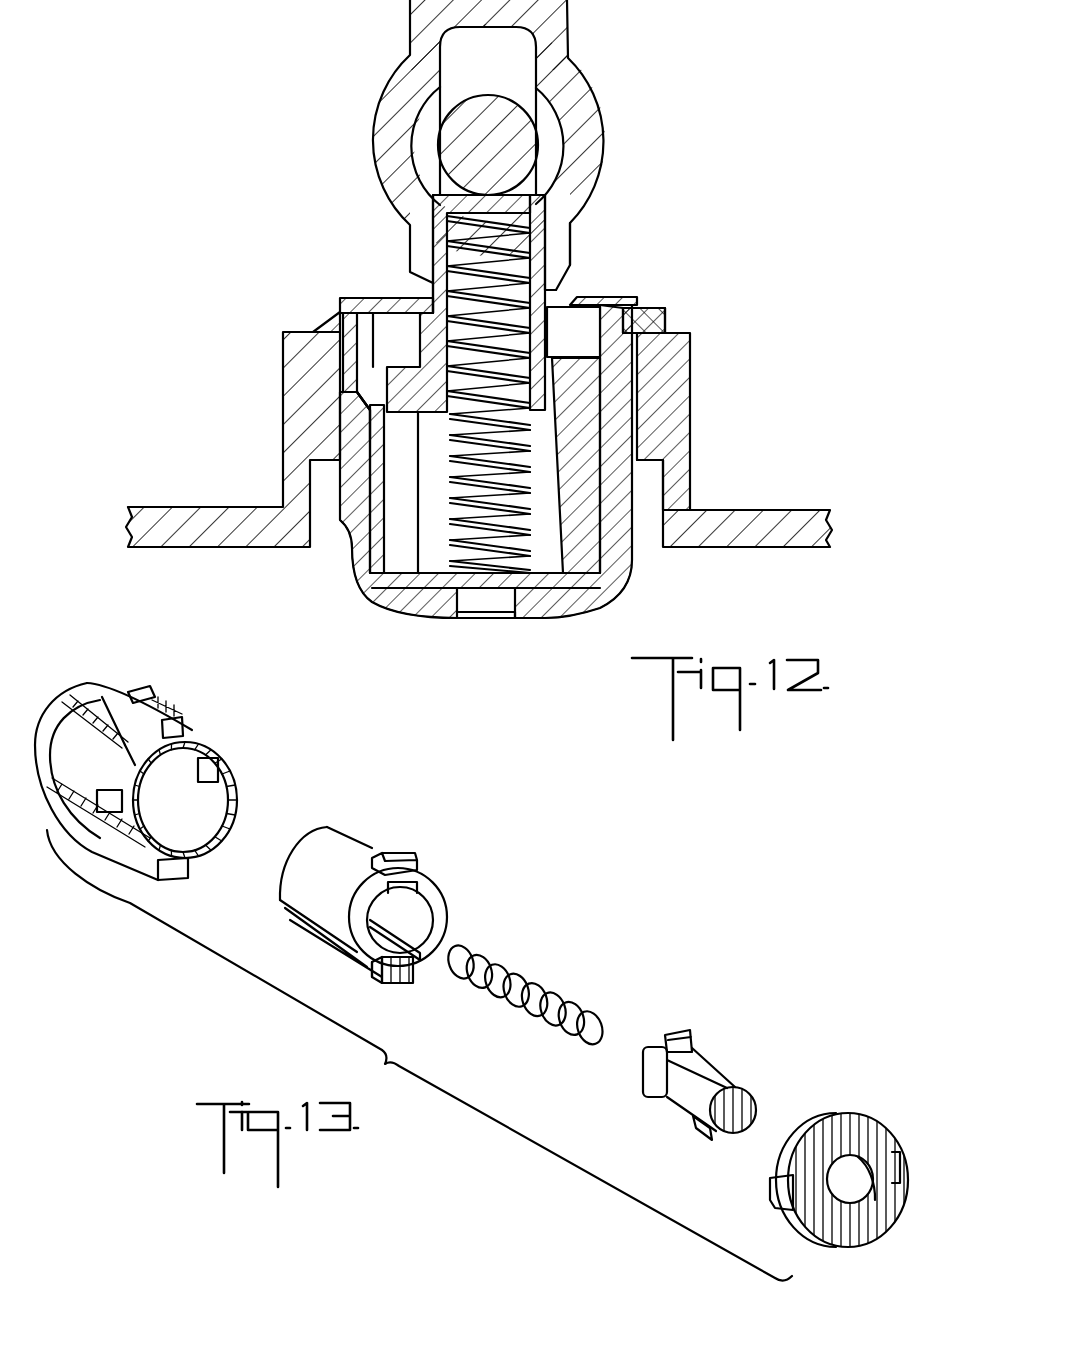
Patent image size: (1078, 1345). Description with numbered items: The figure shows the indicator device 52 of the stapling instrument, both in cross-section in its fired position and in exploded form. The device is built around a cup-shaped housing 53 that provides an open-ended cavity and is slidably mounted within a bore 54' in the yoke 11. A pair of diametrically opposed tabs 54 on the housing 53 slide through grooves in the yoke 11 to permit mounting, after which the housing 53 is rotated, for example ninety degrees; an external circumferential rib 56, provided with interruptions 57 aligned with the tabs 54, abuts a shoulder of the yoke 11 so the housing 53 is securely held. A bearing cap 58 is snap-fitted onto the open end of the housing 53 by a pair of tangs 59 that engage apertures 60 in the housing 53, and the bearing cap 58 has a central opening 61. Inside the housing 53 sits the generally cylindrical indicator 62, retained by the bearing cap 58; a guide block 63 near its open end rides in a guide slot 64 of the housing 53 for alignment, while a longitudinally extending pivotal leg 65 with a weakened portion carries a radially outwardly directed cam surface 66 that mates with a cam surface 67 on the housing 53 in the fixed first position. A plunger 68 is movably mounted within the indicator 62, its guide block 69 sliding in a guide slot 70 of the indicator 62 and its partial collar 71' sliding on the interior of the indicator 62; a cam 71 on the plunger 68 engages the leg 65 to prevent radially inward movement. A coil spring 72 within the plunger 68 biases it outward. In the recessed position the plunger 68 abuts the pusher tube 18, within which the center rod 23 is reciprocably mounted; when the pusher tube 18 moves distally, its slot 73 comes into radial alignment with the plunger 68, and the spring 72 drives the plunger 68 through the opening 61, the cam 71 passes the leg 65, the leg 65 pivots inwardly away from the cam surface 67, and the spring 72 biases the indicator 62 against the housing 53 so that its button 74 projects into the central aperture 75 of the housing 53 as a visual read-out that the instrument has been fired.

In FIG. 12, the yoke 11 is at (230, 548).
In FIG. 12, the pusher tube 18 is at (582, 102).
In FIG. 12, the center rod 23 is at (542, 152).
In FIG. 12, the indicator device 52 is at (410, 622).
In FIG. 13, the indicator device 52 is at (341, 1083).
In FIG. 12, the housing 53 is at (350, 575).
In FIG. 13, the housing 53 is at (117, 675).
In FIG. 12, the tabs 54 is at (501, 345).
In FIG. 13, the tabs 54 is at (205, 795).
In FIG. 12, the bore 54' is at (298, 418).
In FIG. 12, the external circumferential rib 56 is at (643, 500).
In FIG. 13, the external circumferential rib 56 is at (142, 690).
In FIG. 13, the interruptions 57 is at (116, 746).
In FIG. 12, the bearing cap 58 is at (617, 302).
In FIG. 13, the bearing cap 58 is at (888, 1113).
In FIG. 13, the tangs 59 is at (782, 1197).
In FIG. 13, the apertures 60 is at (233, 780).
In FIG. 12, the central opening 61 is at (433, 290).
In FIG. 13, the central opening 61 is at (858, 1192).
In FIG. 12, the indicator 62 is at (407, 570).
In FIG. 13, the indicator 62 is at (372, 835).
In FIG. 13, the guide block 63 is at (400, 852).
In FIG. 12, the guide slot 64 is at (348, 305).
In FIG. 12, the pivotal leg 65 is at (567, 360).
In FIG. 13, the pivotal leg 65 is at (402, 982).
In FIG. 12, the cam surface 66 is at (640, 357).
In FIG. 13, the cam surface 66 is at (380, 973).
In FIG. 12, the cam surface 67 is at (637, 308).
In FIG. 12, the plunger 68 is at (433, 230).
In FIG. 13, the plunger 68 is at (727, 1080).
In FIG. 13, the guide block 69 is at (680, 1032).
In FIG. 13, the guide slot 70 is at (417, 884).
In FIG. 12, the cam 71 is at (579, 278).
In FIG. 13, the cam 71 is at (684, 1147).
In FIG. 12, the partial collar 71' is at (402, 492).
In FIG. 13, the partial collar 71' is at (632, 1093).
In FIG. 12, the coil spring 72 is at (540, 268).
In FIG. 13, the coil spring 72 is at (562, 983).
In FIG. 12, the slot 73 is at (573, 220).
In FIG. 12, the button 74 is at (483, 600).
In FIG. 12, the central aperture 75 is at (510, 613).